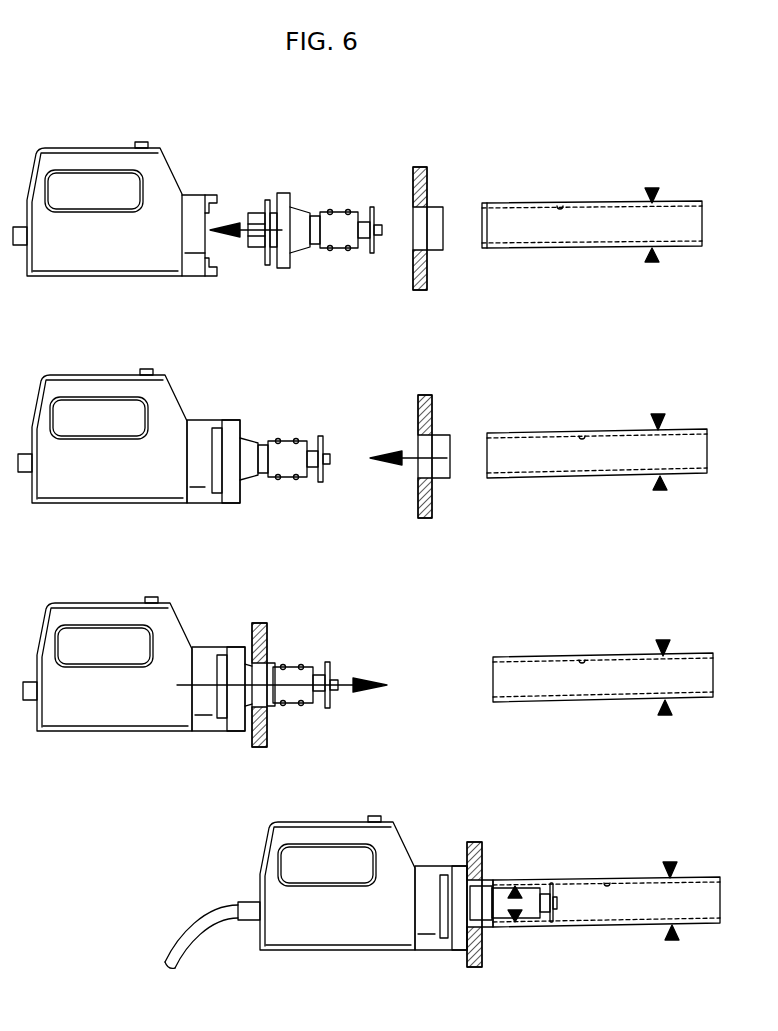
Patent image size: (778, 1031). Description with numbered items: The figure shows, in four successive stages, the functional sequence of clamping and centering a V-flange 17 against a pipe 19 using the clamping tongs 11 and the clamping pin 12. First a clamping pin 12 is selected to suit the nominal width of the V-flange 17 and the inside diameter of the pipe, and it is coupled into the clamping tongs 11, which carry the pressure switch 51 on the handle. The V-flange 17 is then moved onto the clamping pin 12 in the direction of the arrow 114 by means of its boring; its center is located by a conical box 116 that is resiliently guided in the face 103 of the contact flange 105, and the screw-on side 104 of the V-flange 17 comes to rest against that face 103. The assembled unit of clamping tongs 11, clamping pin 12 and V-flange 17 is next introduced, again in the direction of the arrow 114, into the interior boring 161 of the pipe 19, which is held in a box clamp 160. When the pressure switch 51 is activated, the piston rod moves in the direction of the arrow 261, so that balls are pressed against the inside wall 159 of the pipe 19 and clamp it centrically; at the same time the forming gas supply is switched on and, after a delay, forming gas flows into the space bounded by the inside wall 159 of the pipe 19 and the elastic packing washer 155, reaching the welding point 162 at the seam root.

The clamping tongs 11 is at (145, 265).
The clamping pin 12 is at (350, 218).
The V-flange 17 is at (428, 256).
The pipe 19 is at (495, 203).
The pressure switch 51 is at (146, 144).
The face 103 is at (291, 262).
The screw-on side 104 is at (416, 254).
The contact flange 105 is at (286, 199).
The arrow 114 is at (232, 246).
The conical box 116 is at (299, 216).
The elastic packing washer 155 is at (331, 700).
The inside wall 159 is at (560, 204).
The box clamp 160 is at (648, 254).
The interior boring 161 is at (688, 215).
The welding point 162 is at (500, 878).
The arrow 261 is at (363, 678).